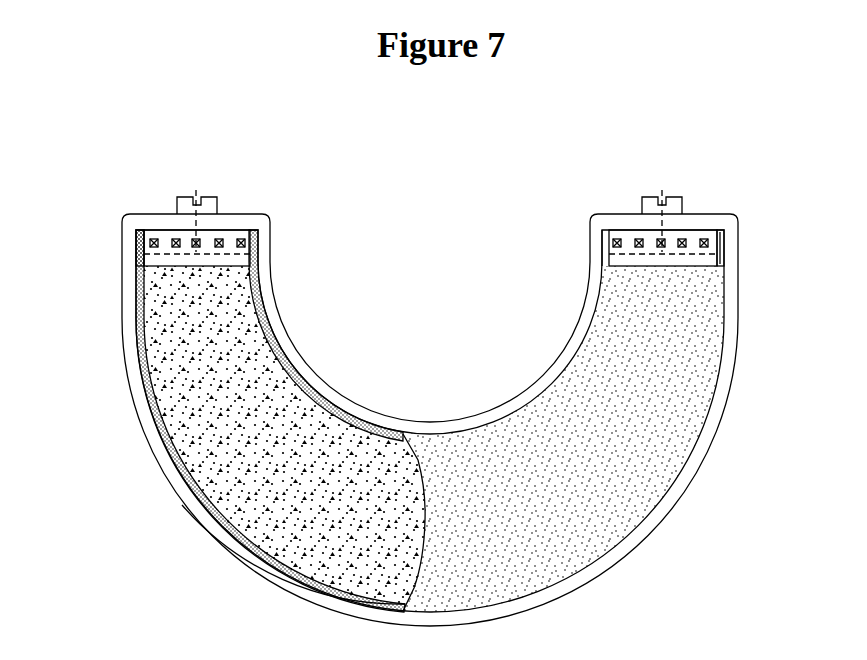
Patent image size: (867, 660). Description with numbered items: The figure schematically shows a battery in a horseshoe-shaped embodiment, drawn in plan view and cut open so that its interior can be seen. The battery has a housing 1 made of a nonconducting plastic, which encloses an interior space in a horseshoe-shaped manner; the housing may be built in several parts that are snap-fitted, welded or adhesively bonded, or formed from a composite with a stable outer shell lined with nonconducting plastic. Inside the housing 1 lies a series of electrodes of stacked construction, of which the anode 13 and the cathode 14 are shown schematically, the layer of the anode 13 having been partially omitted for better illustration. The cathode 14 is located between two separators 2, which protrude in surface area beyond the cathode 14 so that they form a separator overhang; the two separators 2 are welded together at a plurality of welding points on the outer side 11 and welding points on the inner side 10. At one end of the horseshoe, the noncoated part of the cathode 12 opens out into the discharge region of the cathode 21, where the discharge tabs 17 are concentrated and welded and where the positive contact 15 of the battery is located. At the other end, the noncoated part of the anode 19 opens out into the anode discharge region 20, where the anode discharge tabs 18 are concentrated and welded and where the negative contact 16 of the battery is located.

The housing 1 is at (267, 298).
The separators 2 is at (293, 387).
The welding points on the inner side 10 is at (367, 432).
The welding points on the outer side 11 is at (277, 568).
The noncoated part of the cathode 12 is at (162, 265).
The anode 13 is at (648, 395).
The cathode 14 is at (182, 378).
The positive contact 15 is at (207, 203).
The negative contact 16 is at (645, 202).
The discharge tabs 17 is at (153, 245).
The anode discharge tabs 18 is at (717, 248).
The noncoated part of the anode 19 is at (695, 258).
The anode discharge region 20 is at (718, 235).
The discharge region of the cathode 21 is at (143, 238).